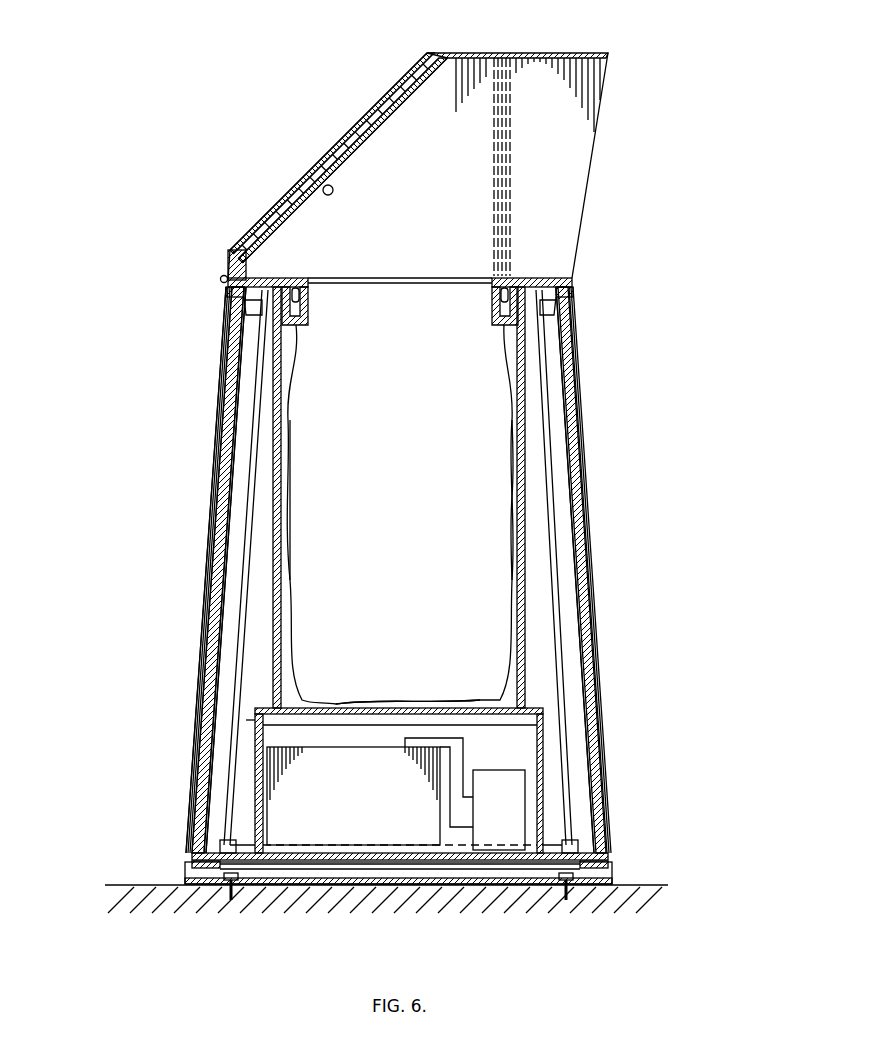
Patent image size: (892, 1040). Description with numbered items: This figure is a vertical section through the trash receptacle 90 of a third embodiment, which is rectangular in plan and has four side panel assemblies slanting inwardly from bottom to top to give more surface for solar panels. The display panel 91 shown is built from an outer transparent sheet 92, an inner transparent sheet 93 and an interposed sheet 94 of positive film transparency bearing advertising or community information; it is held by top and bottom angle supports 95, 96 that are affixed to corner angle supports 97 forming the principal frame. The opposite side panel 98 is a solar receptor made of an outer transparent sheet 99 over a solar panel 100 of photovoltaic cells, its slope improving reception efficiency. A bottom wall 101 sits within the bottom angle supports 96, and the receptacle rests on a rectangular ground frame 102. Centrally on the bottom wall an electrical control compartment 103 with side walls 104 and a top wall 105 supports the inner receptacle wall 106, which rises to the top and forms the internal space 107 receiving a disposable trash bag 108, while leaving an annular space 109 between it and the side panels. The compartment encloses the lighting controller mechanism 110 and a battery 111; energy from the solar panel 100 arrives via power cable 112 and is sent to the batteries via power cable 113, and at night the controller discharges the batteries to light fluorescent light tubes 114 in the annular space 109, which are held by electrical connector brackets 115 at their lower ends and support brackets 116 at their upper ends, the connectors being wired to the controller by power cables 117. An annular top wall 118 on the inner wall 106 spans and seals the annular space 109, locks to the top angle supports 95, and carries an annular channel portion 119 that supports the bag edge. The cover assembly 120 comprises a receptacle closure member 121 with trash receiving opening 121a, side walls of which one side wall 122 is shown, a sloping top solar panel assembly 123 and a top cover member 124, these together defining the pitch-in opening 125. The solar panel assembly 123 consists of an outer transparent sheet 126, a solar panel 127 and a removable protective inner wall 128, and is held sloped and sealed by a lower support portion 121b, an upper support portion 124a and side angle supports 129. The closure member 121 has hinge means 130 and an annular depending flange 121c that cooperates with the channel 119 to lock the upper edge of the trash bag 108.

The trash receptacle 90 is at (592, 353).
The display panel 91 is at (592, 379).
The outer transparent sheet 92 is at (584, 395).
The inner transparent sheet 93 is at (562, 471).
The sheet of positive film transparency material 94 is at (577, 426).
The top angle supports 95 is at (233, 296).
The bottom angle supports 96 is at (194, 862).
The corner angle supports 97 is at (218, 374).
The side panel 98 is at (206, 405).
The outer transparent sheet 99 is at (229, 437).
The solar panel 100 is at (227, 472).
The bottom wall 101 is at (380, 862).
The ground frame 102 is at (613, 876).
The electrical control compartment 103 is at (510, 738).
The side walls 104 is at (254, 758).
The top wall 105 is at (388, 708).
The inner receptacle wall 106 is at (272, 514).
The internal space 107 is at (512, 552).
The disposable trash bag 108 is at (292, 522).
The annular space 109 is at (243, 552).
The lighting controller mechanism 110 is at (518, 812).
The battery 111 is at (363, 812).
The power cable 112 is at (247, 722).
The power cable 113 is at (450, 778).
The fluorescent light tubes 114 is at (237, 617).
The electrical connector brackets 115 is at (221, 846).
The support brackets 116 is at (243, 318).
The power cables 117 is at (229, 824).
The annular top wall 118 is at (264, 283).
The annular channel portion 119 is at (298, 333).
The cover assembly 120 is at (401, 48).
The receptacle closure member 121 is at (283, 290).
The trash receiving opening 121a is at (317, 291).
The lower support portion 121b is at (228, 255).
The annular depending flange 121c is at (307, 323).
The side wall 122 is at (480, 184).
The sloping top solar panel assembly 123 is at (378, 84).
The top cover member 124 is at (540, 50).
The upper support portion 124a is at (436, 52).
The trash receiving (pitch in) opening 125 is at (596, 183).
The outer transparent sheet 126 is at (352, 122).
The solar panel 127 is at (332, 148).
The inner wall 128 is at (300, 182).
The side angle supports 129 is at (263, 213).
The hinge means 130 is at (221, 279).